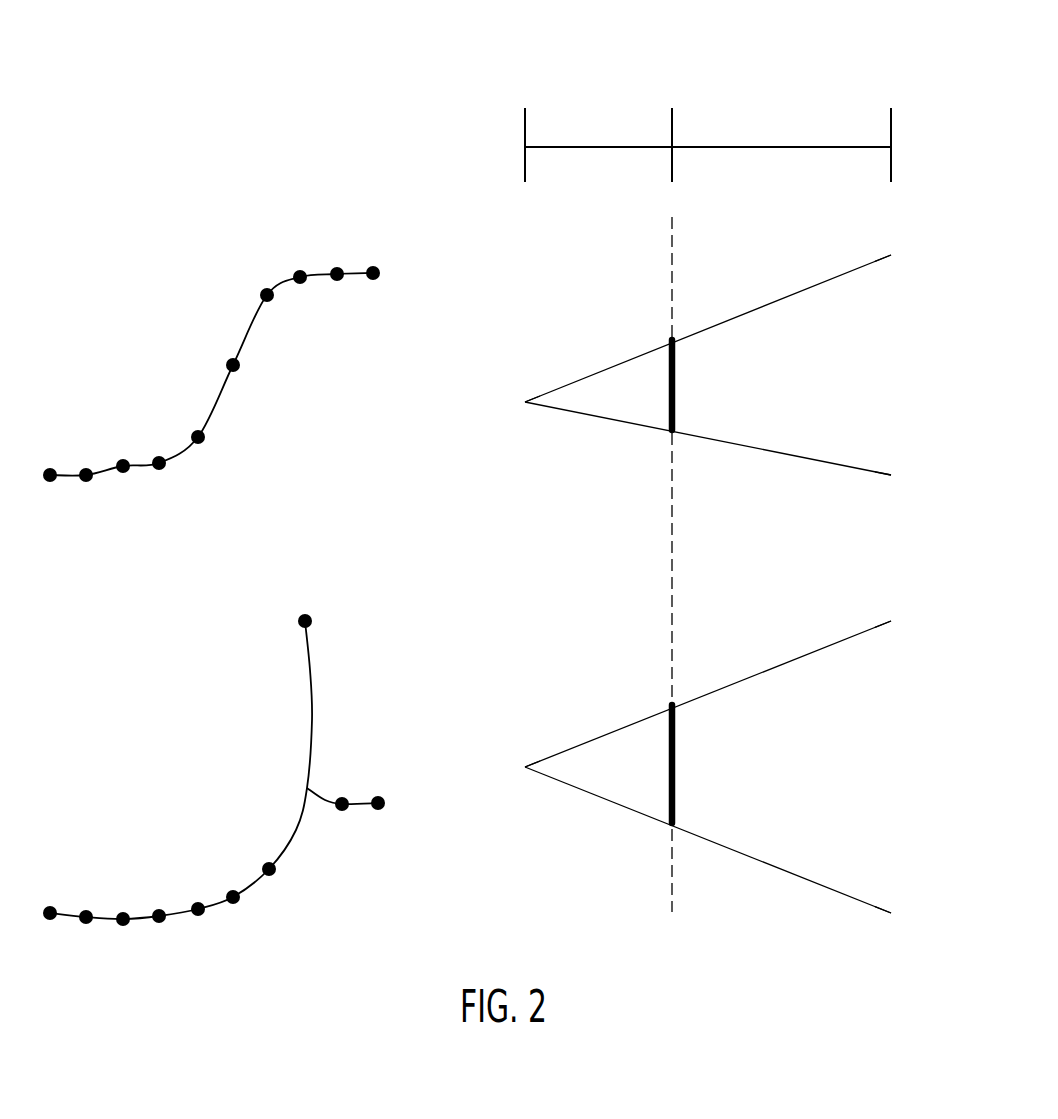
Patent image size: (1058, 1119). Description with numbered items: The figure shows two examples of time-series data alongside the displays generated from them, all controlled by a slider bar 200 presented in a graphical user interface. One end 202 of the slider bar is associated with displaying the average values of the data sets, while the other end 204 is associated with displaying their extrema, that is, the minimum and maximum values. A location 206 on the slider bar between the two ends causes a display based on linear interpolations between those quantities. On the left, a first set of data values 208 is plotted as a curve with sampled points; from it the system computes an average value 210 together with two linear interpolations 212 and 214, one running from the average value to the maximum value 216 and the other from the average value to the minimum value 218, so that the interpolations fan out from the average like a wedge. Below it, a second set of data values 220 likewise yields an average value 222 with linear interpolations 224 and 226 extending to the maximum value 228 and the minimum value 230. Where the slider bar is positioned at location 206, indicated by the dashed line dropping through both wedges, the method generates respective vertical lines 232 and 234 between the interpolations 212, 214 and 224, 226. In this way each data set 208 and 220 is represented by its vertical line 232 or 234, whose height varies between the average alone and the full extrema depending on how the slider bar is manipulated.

The slider bar 200 is at (478, 146).
The one end of the slider bar 202 is at (525, 182).
The other end of the slider bar 204 is at (893, 127).
The location on the slider bar 206 is at (670, 128).
The first set of data values 208 is at (170, 364).
The average value 210 is at (504, 420).
The linear interpolation 212 is at (630, 355).
The linear interpolation 214 is at (575, 412).
The maximum value 216 is at (910, 274).
The minimum value 218 is at (909, 493).
The second set of data values 220 is at (151, 821).
The average value 222 is at (504, 785).
The linear interpolation 224 is at (650, 710).
The linear interpolation 226 is at (578, 792).
The maximum value 228 is at (910, 639).
The minimum value 230 is at (909, 932).
The vertical line 232 is at (676, 402).
The vertical line 234 is at (676, 802).